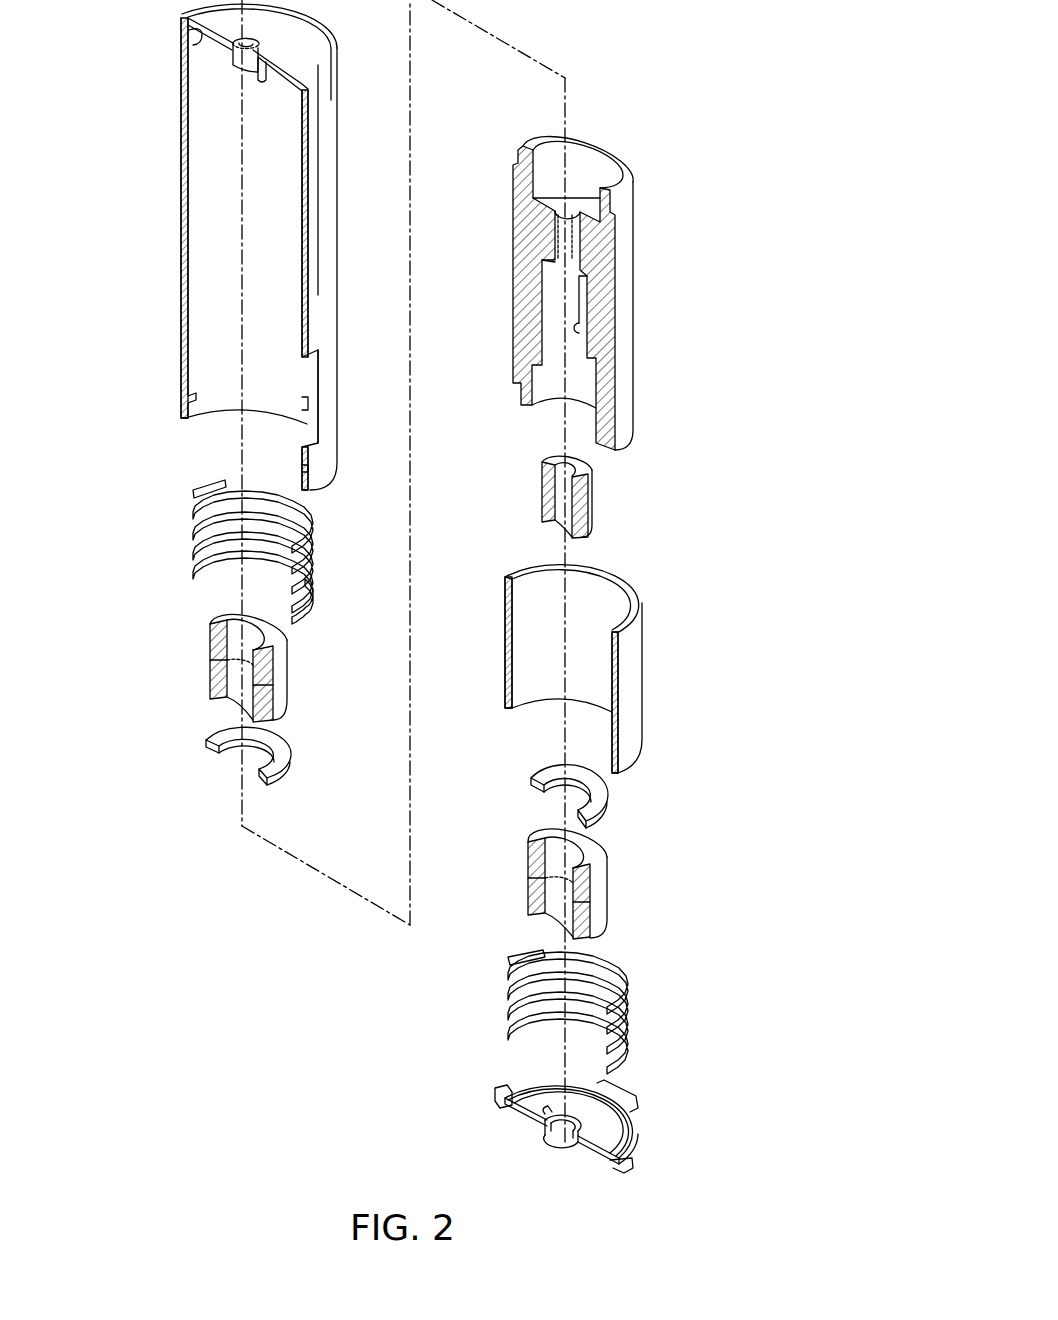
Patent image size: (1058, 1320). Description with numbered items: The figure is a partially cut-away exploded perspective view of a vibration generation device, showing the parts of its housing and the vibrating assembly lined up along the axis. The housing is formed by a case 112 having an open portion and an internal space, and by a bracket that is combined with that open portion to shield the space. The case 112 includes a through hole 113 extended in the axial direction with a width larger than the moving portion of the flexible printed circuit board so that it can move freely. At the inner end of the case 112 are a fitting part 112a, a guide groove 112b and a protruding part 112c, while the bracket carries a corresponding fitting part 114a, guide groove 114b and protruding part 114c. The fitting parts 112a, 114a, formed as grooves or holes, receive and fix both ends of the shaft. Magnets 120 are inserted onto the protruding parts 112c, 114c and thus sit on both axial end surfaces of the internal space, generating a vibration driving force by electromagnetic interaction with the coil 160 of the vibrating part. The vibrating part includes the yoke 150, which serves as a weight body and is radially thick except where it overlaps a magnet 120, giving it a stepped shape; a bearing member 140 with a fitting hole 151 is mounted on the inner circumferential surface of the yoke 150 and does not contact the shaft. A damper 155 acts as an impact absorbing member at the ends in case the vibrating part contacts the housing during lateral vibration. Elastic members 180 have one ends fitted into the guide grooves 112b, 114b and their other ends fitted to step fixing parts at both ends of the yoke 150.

The case 112 is at (177, 210).
The fitting part 112a is at (243, 68).
The guide groove 112b is at (198, 42).
The protruding part 112c is at (236, 62).
The through hole 113 is at (317, 384).
The yoke 150 is at (608, 265).
The fitting hole 151 is at (580, 328).
The bearing member 140 is at (580, 508).
The coil 160 is at (633, 678).
The damper 155 is at (208, 738).
The magnet 120 is at (212, 662).
The elastic member 180 is at (194, 517).
The fitting part 114a is at (558, 1136).
The guide groove 114b is at (545, 1128).
The protruding part 114c is at (540, 1134).